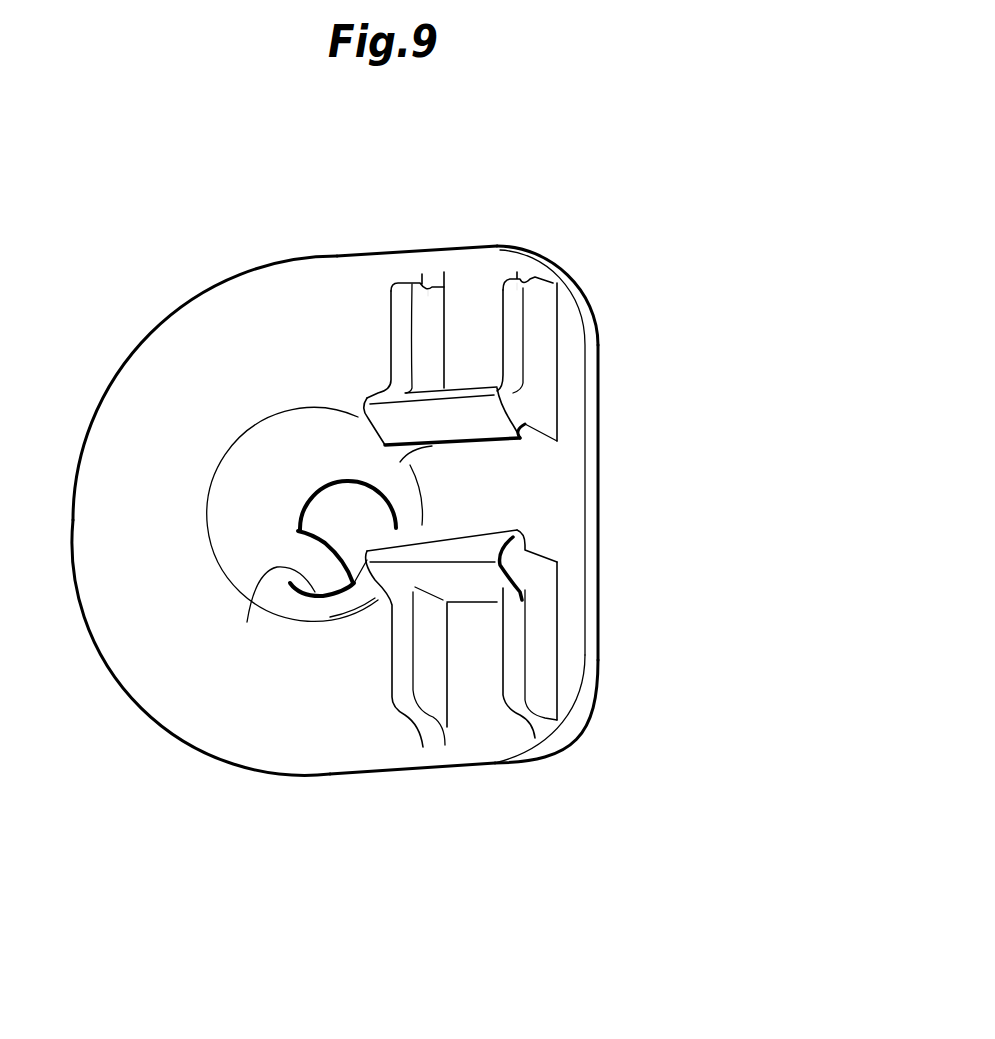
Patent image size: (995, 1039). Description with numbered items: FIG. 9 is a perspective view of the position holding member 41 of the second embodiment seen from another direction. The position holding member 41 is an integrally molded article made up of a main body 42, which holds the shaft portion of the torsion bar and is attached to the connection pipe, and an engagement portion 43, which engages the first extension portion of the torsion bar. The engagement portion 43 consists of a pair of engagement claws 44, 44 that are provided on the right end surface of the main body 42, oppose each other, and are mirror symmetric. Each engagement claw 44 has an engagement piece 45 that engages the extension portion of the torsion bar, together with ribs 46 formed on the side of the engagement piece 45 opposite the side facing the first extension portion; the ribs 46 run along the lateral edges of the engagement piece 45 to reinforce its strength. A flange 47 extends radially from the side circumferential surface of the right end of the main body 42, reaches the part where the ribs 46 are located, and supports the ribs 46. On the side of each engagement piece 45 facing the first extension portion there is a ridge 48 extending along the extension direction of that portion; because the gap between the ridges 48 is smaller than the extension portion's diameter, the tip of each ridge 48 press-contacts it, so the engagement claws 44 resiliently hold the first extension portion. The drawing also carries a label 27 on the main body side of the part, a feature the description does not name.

The position holding member 41 is at (448, 504).
The main body 42 is at (330, 702).
The engagement portion 43 is at (613, 504).
The engagement claw 44 is at (562, 400).
The engagement piece 45 is at (537, 566).
The rib 46 is at (517, 283).
The flange 47 is at (112, 633).
The ridge 48 is at (402, 532).
The protrusion 27 is at (250, 620).